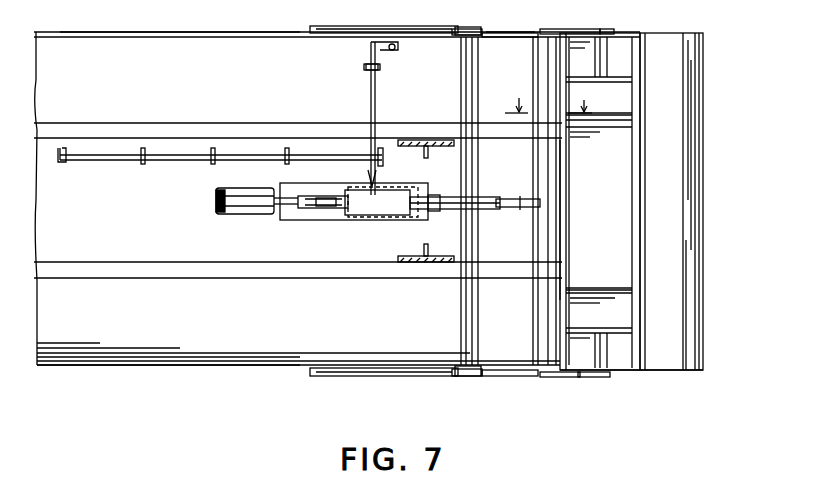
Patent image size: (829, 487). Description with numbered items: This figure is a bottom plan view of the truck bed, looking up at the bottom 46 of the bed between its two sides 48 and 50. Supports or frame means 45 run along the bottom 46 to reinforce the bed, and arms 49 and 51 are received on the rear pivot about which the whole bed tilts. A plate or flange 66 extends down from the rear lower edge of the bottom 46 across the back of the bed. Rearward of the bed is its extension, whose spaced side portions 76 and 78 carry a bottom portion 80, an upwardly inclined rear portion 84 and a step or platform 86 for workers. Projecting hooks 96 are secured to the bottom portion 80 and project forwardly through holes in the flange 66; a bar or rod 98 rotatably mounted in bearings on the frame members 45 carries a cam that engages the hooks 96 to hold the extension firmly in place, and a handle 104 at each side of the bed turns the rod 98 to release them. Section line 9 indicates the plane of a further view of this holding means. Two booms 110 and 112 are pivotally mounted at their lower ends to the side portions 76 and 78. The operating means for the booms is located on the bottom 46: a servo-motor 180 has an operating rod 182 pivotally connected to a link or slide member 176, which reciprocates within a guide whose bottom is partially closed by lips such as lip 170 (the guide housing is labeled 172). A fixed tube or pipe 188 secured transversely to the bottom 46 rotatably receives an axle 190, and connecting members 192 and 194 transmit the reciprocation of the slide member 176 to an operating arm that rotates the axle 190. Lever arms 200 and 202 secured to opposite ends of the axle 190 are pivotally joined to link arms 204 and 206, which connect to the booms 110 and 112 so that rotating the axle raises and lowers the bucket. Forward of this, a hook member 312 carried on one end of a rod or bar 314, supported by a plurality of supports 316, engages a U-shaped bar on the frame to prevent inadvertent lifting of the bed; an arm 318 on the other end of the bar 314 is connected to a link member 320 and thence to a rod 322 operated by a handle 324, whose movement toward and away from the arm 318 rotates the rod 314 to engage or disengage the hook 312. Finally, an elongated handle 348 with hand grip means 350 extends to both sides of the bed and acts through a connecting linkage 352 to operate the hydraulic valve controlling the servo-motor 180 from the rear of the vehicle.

The section line 9- 9 is at (548, 95).
The supports or frame means 45 is at (132, 126).
The bottom 46 is at (182, 94).
The side 48 is at (185, 33).
The arm 49 is at (420, 140).
The side 50 is at (195, 366).
The arm 51 is at (404, 258).
The plate or flange 66 is at (560, 258).
The side portion 76 is at (634, 36).
The side portion 78 is at (660, 372).
The bottom portion 80 is at (612, 177).
The upwardly inclined rear portion 84 is at (642, 188).
The step or platform 86 is at (690, 252).
The hooks 96 is at (624, 120).
The bar or rod 98 is at (555, 208).
The handle 104 is at (536, 34).
The boom 110 is at (602, 31).
The boom 112 is at (586, 378).
The inwardly facing flange or lip 170 is at (330, 222).
The cylinder housing 172 is at (332, 185).
The link or slide member 176 is at (395, 204).
The servo-motor 180 is at (240, 206).
The operating rod 182 is at (272, 216).
The fixed tube or pipe 188 is at (462, 328).
The axle 190 is at (462, 35).
The connecting member 192 is at (448, 214).
The connecting member 194 is at (455, 196).
The lever arm 200 is at (368, 30).
The lever arm 202 is at (368, 378).
The link arm 204 is at (488, 31).
The link arm 206 is at (470, 378).
The hook member 312 is at (50, 150).
The rod or bar 314 is at (180, 158).
The supports 316 is at (105, 160).
The arm 318 is at (385, 160).
The link member 320 is at (384, 93).
The bar or rod 322 is at (370, 97).
The handle 324 is at (392, 52).
The elongated handle 348 is at (534, 254).
The hand grip means 350 is at (578, 34).
The connecting linkage 352 is at (524, 198).